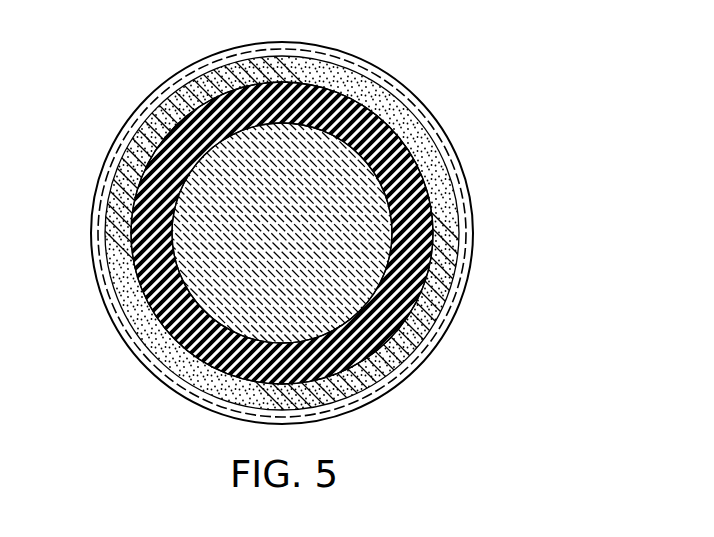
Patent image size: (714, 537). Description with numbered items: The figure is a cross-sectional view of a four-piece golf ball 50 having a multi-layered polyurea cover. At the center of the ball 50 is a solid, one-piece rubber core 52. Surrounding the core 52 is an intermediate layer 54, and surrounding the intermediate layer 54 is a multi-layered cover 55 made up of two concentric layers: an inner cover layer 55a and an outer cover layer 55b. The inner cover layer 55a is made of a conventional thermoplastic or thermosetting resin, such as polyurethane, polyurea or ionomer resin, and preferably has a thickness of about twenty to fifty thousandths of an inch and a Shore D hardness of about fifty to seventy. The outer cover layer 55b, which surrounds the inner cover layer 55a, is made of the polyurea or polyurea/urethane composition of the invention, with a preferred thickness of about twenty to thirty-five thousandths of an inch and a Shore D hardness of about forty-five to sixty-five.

The four-piece golf ball 50 is at (462, 33).
The rubber core 52 is at (293, 208).
The intermediate layer 54 is at (420, 240).
The multi-layered cover 55 is at (543, 283).
The inner cover layer 55a is at (433, 297).
The outer cover layer 55b is at (426, 353).